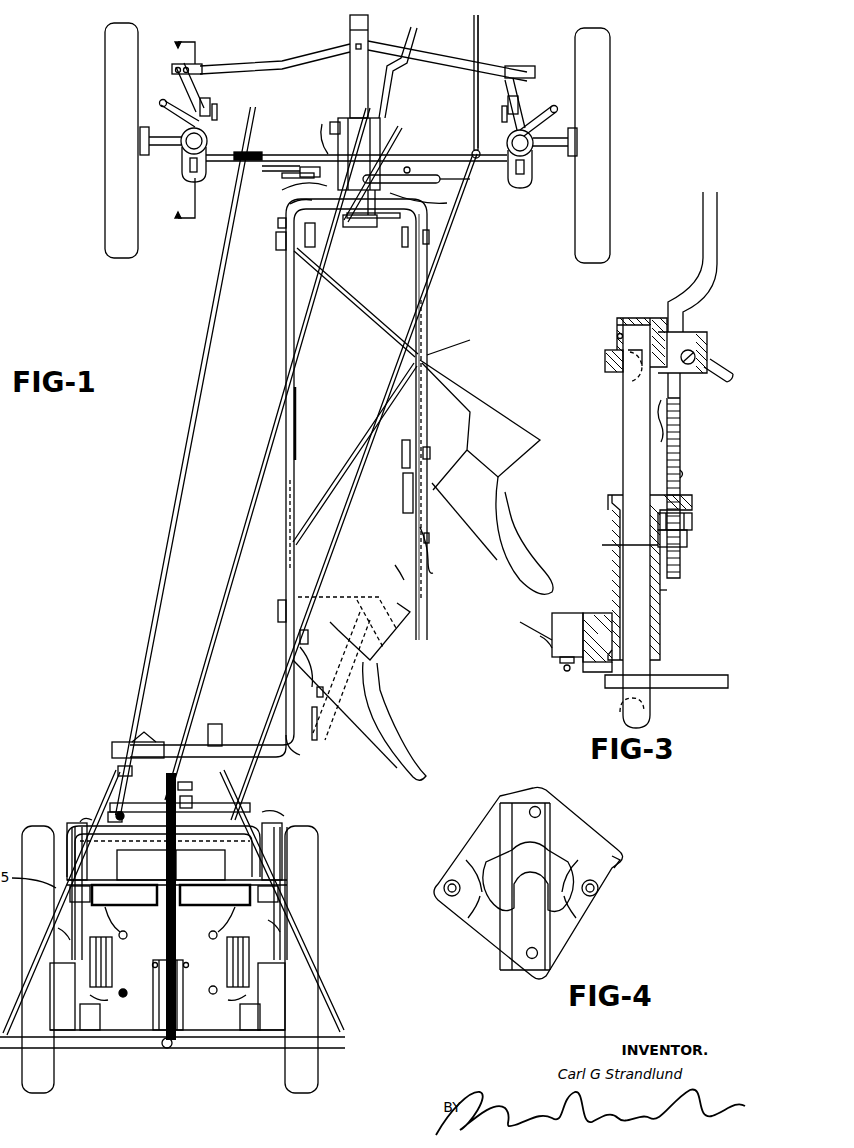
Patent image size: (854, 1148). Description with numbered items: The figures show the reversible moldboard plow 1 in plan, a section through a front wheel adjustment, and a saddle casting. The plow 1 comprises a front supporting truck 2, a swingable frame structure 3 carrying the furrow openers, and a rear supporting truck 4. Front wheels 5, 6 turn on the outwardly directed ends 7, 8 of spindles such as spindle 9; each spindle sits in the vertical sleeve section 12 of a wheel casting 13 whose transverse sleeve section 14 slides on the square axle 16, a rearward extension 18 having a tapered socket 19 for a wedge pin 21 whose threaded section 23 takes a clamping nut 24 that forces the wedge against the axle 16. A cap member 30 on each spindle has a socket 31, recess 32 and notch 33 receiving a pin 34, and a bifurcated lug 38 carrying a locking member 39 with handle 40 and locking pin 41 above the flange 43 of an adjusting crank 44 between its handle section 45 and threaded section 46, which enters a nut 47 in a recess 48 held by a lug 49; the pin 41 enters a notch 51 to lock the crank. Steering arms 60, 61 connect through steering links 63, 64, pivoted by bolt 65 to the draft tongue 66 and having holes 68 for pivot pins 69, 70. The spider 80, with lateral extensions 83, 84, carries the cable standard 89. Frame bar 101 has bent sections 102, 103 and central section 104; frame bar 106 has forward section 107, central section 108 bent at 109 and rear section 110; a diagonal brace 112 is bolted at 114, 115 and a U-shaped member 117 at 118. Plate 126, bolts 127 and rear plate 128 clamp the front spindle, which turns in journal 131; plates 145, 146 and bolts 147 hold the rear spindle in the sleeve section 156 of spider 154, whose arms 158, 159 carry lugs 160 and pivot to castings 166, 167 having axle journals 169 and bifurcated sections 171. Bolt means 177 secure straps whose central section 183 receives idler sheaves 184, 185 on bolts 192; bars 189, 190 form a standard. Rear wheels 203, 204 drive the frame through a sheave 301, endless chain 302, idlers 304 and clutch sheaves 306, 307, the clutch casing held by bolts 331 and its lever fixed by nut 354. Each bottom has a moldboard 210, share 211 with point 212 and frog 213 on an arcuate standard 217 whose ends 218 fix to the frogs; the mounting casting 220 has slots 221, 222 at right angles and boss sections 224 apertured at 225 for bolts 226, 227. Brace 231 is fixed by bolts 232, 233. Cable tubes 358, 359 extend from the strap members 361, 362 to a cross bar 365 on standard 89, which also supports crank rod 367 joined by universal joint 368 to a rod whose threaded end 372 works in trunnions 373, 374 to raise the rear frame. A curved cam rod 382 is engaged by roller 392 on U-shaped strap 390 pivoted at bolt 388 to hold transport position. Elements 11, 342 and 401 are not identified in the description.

In FIG. 1, the reversible moldboard plow 1 is at (78, 318).
In FIG. 1, the front supporting truck 2 is at (228, 33).
In FIG. 1, the swingable frame structure 3 is at (240, 326).
In FIG. 1, the rear supporting truck 4 is at (126, 1068).
In FIG. 1, the wheel 5 is at (116, 63).
In FIG. 1, the wheel 6 is at (600, 68).
In FIG. 1, the lower laterally outwardly directed end 7 is at (160, 146).
In FIG. 3, the lower laterally outwardly directed end 7 is at (618, 706).
In FIG. 1, the lower laterally outwardly directed end 8 is at (556, 150).
In FIG. 3, the spindle 9 is at (628, 460).
In FIG. 1, the housing 11 is at (167, 996).
In FIG. 3, the vertical sleeve section 12 is at (612, 516).
In FIG. 3, the wheel casting 13 is at (660, 592).
In FIG. 1, the transverse sleeve section 14 is at (205, 168).
In FIG. 3, the transverse sleeve section 14 is at (598, 613).
In FIG. 1, the axle 16 is at (285, 154).
In FIG. 3, the axle 16 is at (596, 672).
In FIG. 3, the rearward extension 18 is at (522, 622).
In FIG. 3, the tapered socket 19 is at (540, 638).
In FIG. 1, the wedge pin 21 is at (185, 176).
In FIG. 3, the wedge pin 21 is at (565, 613).
In FIG. 3, the threaded section 23 is at (565, 670).
In FIG. 3, the clamping nut 24 is at (560, 660).
In FIG. 1, the cap member 30 is at (200, 139).
In FIG. 3, the cap member 30 is at (614, 326).
In FIG. 3, the socket 31 is at (616, 337).
In FIG. 3, the recess 32 is at (604, 360).
In FIG. 3, the notch 33 is at (624, 382).
In FIG. 3, the pin 34 is at (628, 366).
In FIG. 1, the bifurcated lug 38 is at (205, 103).
In FIG. 3, the bifurcated lug 38 is at (684, 334).
In FIG. 1, the locking member 39 is at (212, 112).
In FIG. 3, the locking member 39 is at (695, 350).
In FIG. 1, the handle 40 is at (170, 104).
In FIG. 3, the handle 40 is at (718, 364).
In FIG. 3, the locking pin 41 is at (700, 356).
In FIG. 3, the flange 43 is at (688, 380).
In FIG. 3, the adjusting crank 44 is at (680, 430).
In FIG. 3, the handle section 45 is at (703, 245).
In FIG. 3, the lower threaded section 46 is at (682, 470).
In FIG. 3, the nut 47 is at (687, 542).
In FIG. 3, the recess 48 is at (619, 545).
In FIG. 3, the lug 49 is at (692, 518).
In FIG. 3, the notch 51 is at (681, 408).
In FIG. 1, the steering arm 60 is at (203, 86).
In FIG. 3, the steering arm 60 is at (672, 688).
In FIG. 1, the second steering arm 61 is at (545, 108).
In FIG. 1, the steering link 63 is at (292, 57).
In FIG. 1, the steering link 64 is at (460, 60).
In FIG. 1, the bolt 65 is at (368, 45).
In FIG. 1, the draft tongue 66 is at (348, 28).
In FIG. 1, the holes 68 is at (200, 62).
In FIG. 1, the pivot pin 69 is at (176, 67).
In FIG. 1, the pivot pin 70 is at (528, 72).
In FIG. 1, the spider 80 is at (390, 110).
In FIG. 1, the lateral extension 83 is at (300, 128).
In FIG. 1, the lateral extension 84 is at (417, 142).
In FIG. 1, the cable standard 89 is at (345, 118).
In FIG. 1, the frame bar 101 is at (287, 343).
In FIG. 1, the forward laterally bent section 102 is at (392, 220).
In FIG. 1, the rear laterally bent section 103 is at (224, 736).
In FIG. 1, the central section 104 is at (296, 412).
In FIG. 1, the second frame bar 106 is at (405, 250).
In FIG. 1, the laterally directed section 107 is at (290, 205).
In FIG. 1, the central section 108 is at (427, 355).
In FIG. 1, the angled rear portion 109 is at (318, 722).
In FIG. 1, the rear laterally directed section 110 is at (120, 803).
In FIG. 1, the diagonal brace 112 is at (350, 333).
In FIG. 1, the bolts 114 is at (276, 240).
In FIG. 1, the bolts 115 is at (402, 455).
In FIG. 1, the U-shaped member 117 is at (278, 222).
In FIG. 1, the bolt 118 is at (430, 238).
In FIG. 1, the plate 126 is at (300, 186).
In FIG. 1, the bolts 127 is at (345, 228).
In FIG. 1, the rear plate 128 is at (321, 235).
In FIG. 1, the sleeve or journal 131 is at (300, 175).
In FIG. 1, the plate 145 is at (128, 740).
In FIG. 1, the plate 146 is at (130, 772).
In FIG. 1, the bolts 147 is at (150, 740).
In FIG. 1, the spider 154 is at (62, 828).
In FIG. 1, the journal or sleeve section 156 is at (192, 788).
In FIG. 1, the laterally extending arm 158 is at (90, 822).
In FIG. 1, the laterally extending arm 159 is at (276, 815).
In FIG. 1, the apertured lugs 160 is at (77, 828).
In FIG. 1, the casting 166 is at (60, 930).
In FIG. 1, the casting 167 is at (282, 925).
In FIG. 1, the rear axle journal 169 is at (26, 990).
In FIG. 1, the bifurcated forward section 171 is at (70, 855).
In FIG. 1, the bolt means 177 is at (70, 895).
In FIG. 1, the central section 183 is at (118, 934).
In FIG. 1, the idler sheave 184 is at (112, 955).
In FIG. 1, the idler sheave 185 is at (227, 955).
In FIG. 1, the bar 189 is at (152, 965).
In FIG. 1, the bar 190 is at (189, 965).
In FIG. 1, the bolts 192 is at (171, 894).
In FIG. 1, the rear truck wheel 203 is at (36, 1093).
In FIG. 1, the rear truck wheel 204 is at (298, 1093).
In FIG. 1, the moldboard 210 is at (508, 540).
In FIG. 1, the share 211 is at (490, 384).
In FIG. 1, the point 212 is at (427, 305).
In FIG. 1, the frog 213 is at (462, 420).
In FIG. 1, the plow bottom standard 217 is at (429, 540).
In FIG. 1, the ends 218 is at (430, 453).
In FIG. 1, the mounting casting member 220 is at (430, 565).
In FIG. 4, the mounting casting member 220 is at (596, 818).
In FIG. 4, the slots 221 is at (500, 820).
In FIG. 4, the slots 222 is at (620, 856).
In FIG. 4, the boss sections 224 is at (460, 866).
In FIG. 4, the apertures 225 is at (532, 806).
In FIG. 1, the bolts 226 is at (403, 500).
In FIG. 1, the bolts 227 is at (436, 504).
In FIG. 1, the brace 231 is at (386, 648).
In FIG. 1, the bolts 232 is at (278, 608).
In FIG. 1, the bolts 233 is at (398, 572).
In FIG. 1, the sheave 301 is at (200, 865).
In FIG. 1, the endless chain 302 is at (242, 1020).
In FIG. 1, the idlers 304 is at (80, 878).
In FIG. 1, the clutch sheave 306 is at (108, 1000).
In FIG. 1, the clutch sheave 307 is at (226, 1000).
In FIG. 1, the bolts 331 is at (137, 995).
In FIG. 1, the link 342 is at (216, 932).
In FIG. 1, the nut 354 is at (167, 1050).
In FIG. 1, the tube 358 is at (163, 568).
In FIG. 1, the tube 359 is at (448, 275).
In FIG. 1, the strap member 361 is at (240, 805).
In FIG. 1, the strap member 362 is at (146, 804).
In FIG. 1, the cross bar 365 is at (250, 152).
In FIG. 1, the crank rod 367 is at (246, 530).
In FIG. 1, the universal joint 368 is at (115, 812).
In FIG. 1, the threaded end 372 is at (180, 1046).
In FIG. 1, the trunnion 373 is at (158, 1020).
In FIG. 1, the trunnion 374 is at (192, 804).
In FIG. 1, the curved rod 382 is at (456, 180).
In FIG. 1, the pivot bolt 388 is at (336, 120).
In FIG. 1, the U-shaped strap member 390 is at (324, 126).
In FIG. 1, the roller 392 is at (388, 148).
In FIG. 1, the pin 401 is at (411, 168).